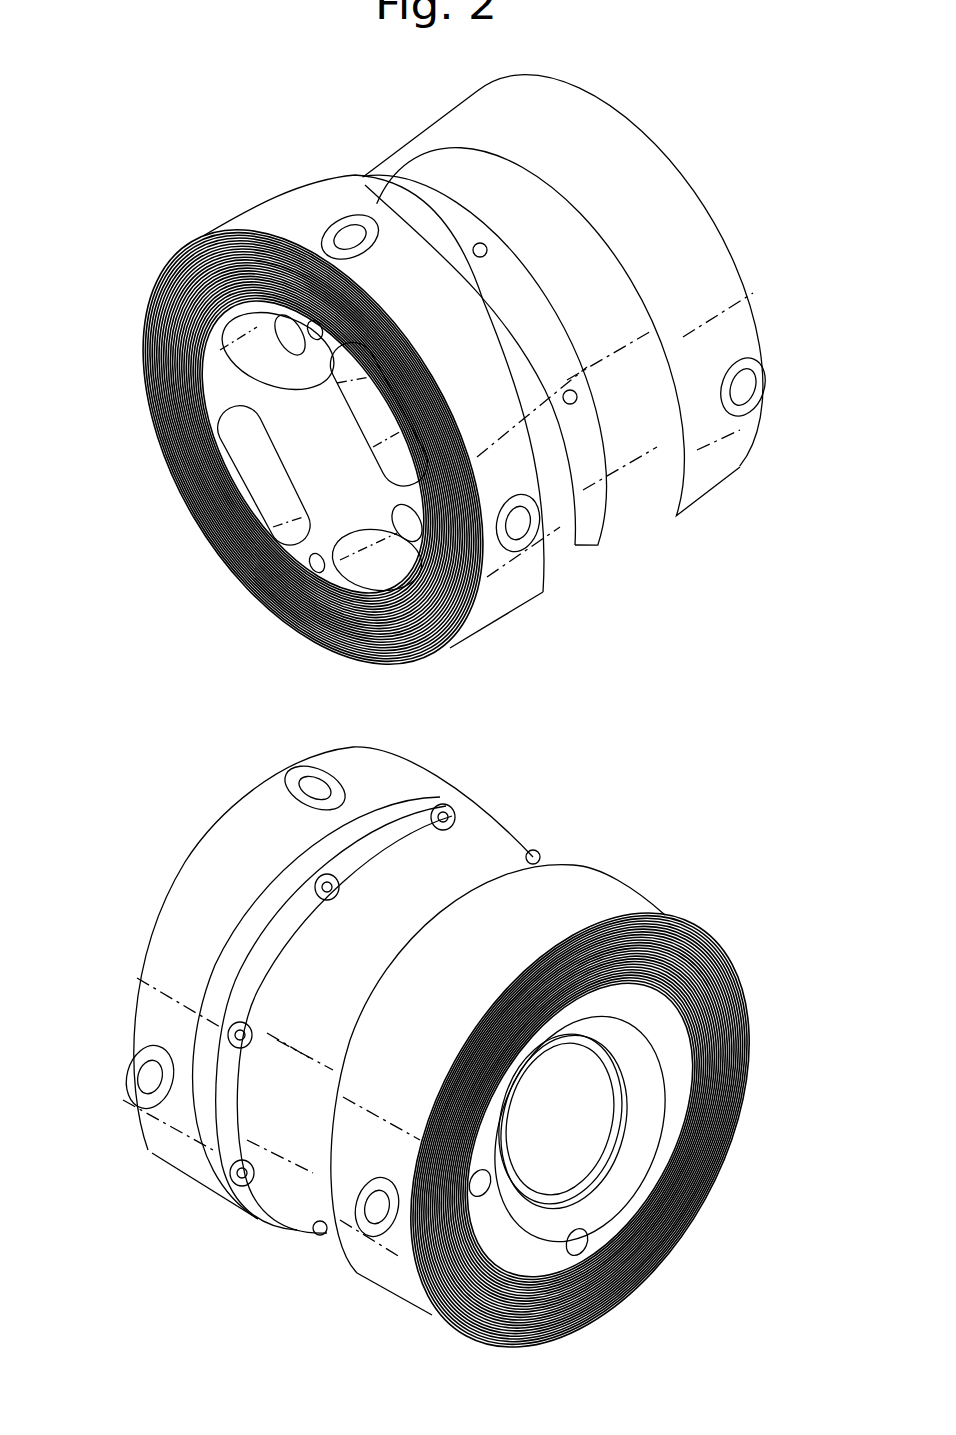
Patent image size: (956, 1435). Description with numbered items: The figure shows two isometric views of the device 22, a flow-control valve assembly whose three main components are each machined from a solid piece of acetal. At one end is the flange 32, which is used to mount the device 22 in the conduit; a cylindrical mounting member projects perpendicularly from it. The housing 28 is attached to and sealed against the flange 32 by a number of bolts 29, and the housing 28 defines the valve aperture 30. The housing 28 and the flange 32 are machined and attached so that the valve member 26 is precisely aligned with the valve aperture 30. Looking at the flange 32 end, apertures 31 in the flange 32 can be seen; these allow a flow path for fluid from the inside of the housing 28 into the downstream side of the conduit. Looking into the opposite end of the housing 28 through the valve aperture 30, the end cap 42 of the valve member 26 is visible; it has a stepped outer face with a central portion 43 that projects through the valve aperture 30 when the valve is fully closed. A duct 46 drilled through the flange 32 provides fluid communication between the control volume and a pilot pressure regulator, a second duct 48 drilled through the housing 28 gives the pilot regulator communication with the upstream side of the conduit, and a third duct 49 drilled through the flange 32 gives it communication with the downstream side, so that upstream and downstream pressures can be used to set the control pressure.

The device 22 is at (298, 141).
The valve member 26 is at (550, 1163).
The housing 28 is at (603, 268).
The bolts 29 is at (573, 400).
The valve aperture 30 is at (597, 1050).
The apertures 31 is at (340, 387).
The flange 32 is at (262, 213).
The end cap 42 is at (577, 1090).
The central portion 43 is at (563, 1120).
The duct 46 is at (520, 530).
The second duct 48 is at (377, 1213).
The third duct 49 is at (345, 238).